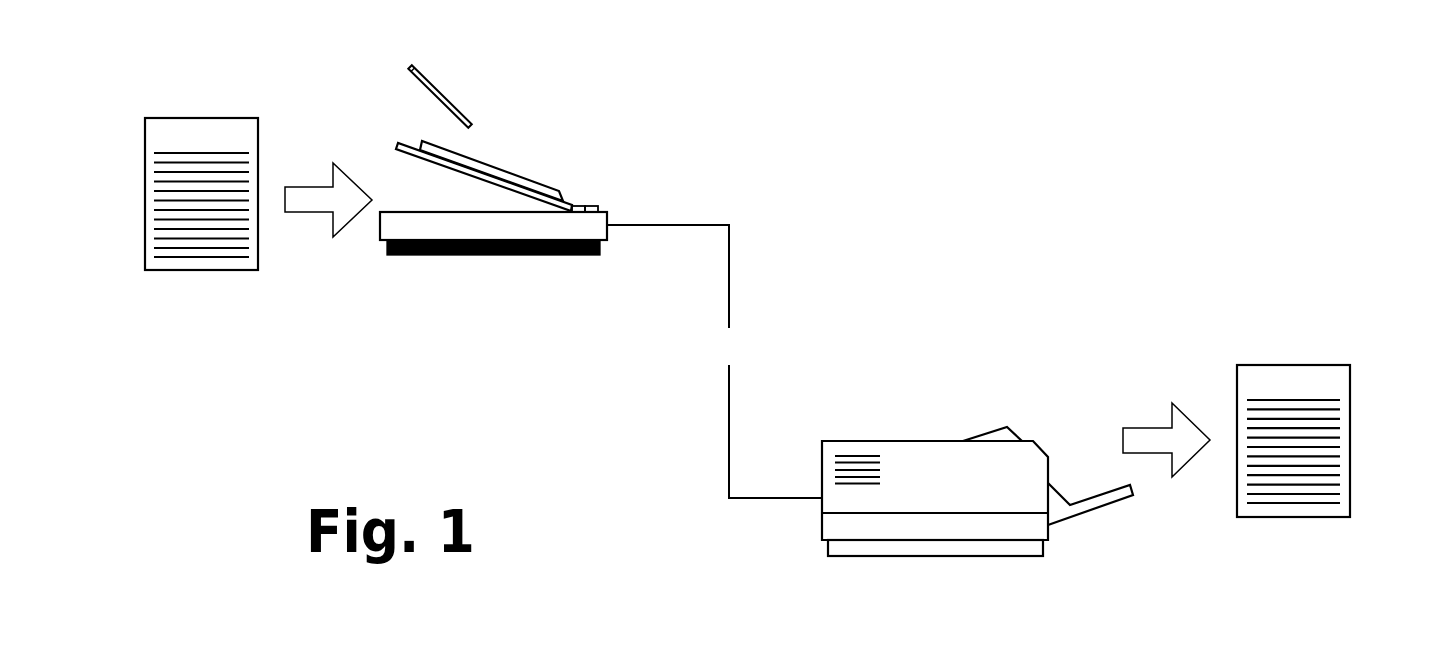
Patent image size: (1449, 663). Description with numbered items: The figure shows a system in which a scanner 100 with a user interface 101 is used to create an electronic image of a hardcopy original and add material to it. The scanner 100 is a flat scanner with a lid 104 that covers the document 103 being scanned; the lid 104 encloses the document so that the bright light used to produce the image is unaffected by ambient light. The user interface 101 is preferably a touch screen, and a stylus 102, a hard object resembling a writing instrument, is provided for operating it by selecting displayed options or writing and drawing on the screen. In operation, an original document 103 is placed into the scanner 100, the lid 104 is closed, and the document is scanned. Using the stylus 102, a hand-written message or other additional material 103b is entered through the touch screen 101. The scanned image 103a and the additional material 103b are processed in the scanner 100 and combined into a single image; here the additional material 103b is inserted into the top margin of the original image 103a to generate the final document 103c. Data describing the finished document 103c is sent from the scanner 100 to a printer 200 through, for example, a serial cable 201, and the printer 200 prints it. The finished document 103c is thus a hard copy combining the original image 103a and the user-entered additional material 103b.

The scanner 100 is at (493, 255).
The user interface 101 is at (522, 175).
The stylus 102 is at (447, 97).
The document 103 is at (171, 137).
The lid 104 is at (402, 140).
The printer 200 is at (937, 460).
The serial cable 201 is at (714, 361).
The image 103a is at (1332, 438).
The additional material 103b is at (1292, 382).
The final document 103c is at (1252, 550).